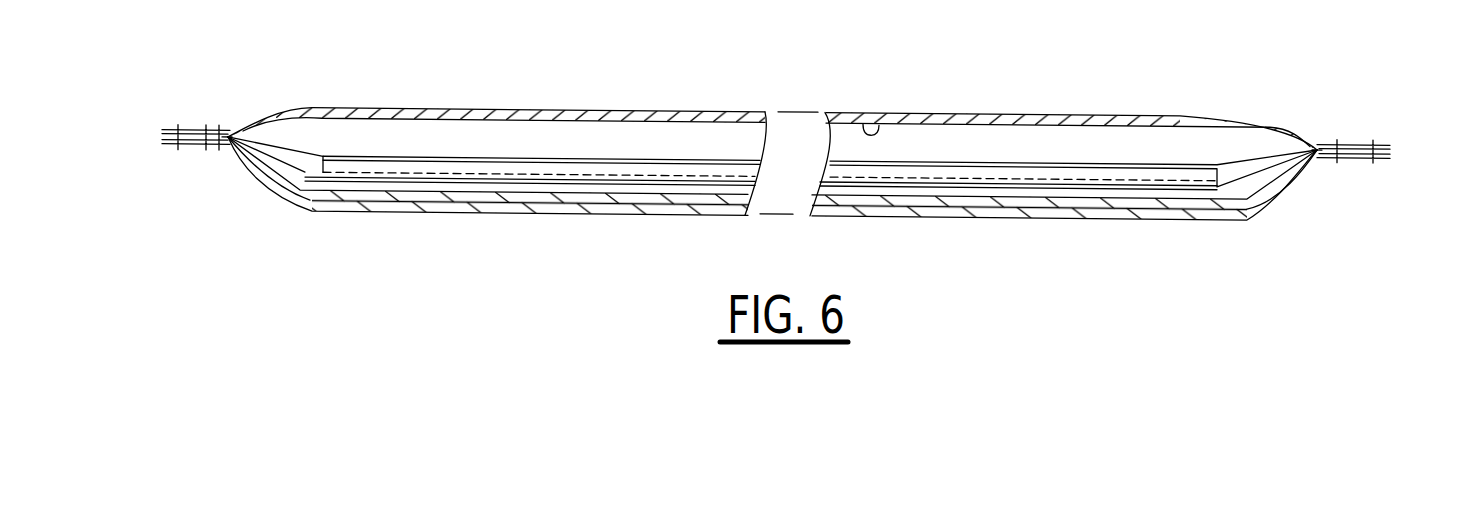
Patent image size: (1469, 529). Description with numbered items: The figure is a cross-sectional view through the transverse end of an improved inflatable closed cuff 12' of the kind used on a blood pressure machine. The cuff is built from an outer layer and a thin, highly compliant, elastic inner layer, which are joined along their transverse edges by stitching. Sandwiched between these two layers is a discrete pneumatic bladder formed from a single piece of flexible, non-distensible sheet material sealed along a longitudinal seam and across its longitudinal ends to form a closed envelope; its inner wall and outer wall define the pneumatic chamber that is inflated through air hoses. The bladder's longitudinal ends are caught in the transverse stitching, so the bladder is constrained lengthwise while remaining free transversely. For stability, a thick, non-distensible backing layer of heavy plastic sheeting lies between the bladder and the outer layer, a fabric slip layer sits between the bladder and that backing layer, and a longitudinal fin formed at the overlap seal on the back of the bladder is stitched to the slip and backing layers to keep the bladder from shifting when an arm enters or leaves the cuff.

The inflatable closed cuff 12' is at (776, 110).